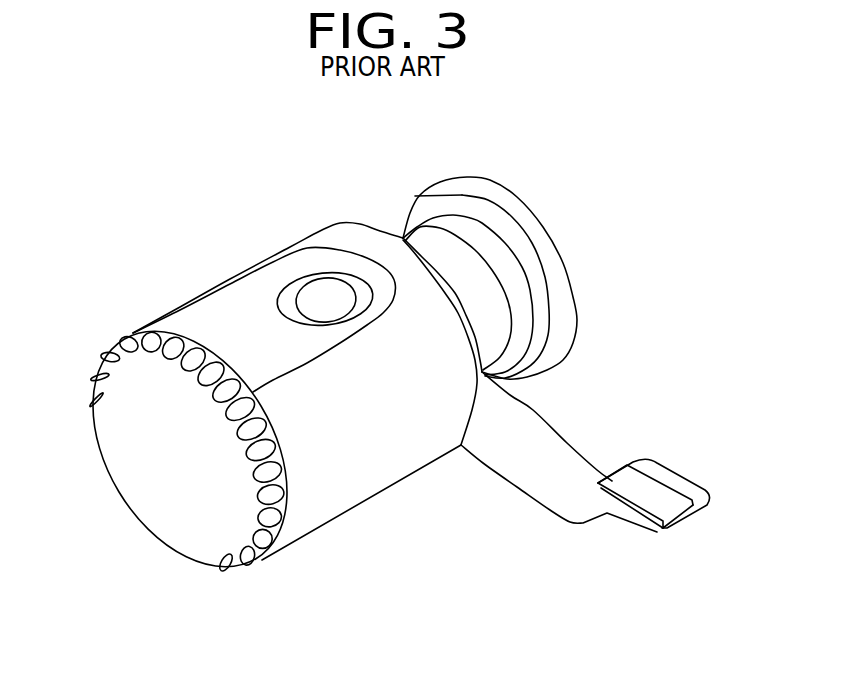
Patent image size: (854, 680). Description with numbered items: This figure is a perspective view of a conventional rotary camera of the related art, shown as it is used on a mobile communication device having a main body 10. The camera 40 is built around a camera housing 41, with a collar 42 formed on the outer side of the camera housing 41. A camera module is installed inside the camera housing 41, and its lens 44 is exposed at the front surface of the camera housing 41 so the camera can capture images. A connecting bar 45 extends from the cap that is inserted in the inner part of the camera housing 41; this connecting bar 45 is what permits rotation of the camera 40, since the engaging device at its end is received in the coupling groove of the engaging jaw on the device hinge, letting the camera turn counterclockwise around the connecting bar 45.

The main body 10 is at (497, 333).
The camera 40 is at (221, 267).
The camera housing 41 is at (298, 245).
The collar 42 is at (135, 333).
The lens 44 is at (335, 293).
The connecting bar 45 is at (462, 232).